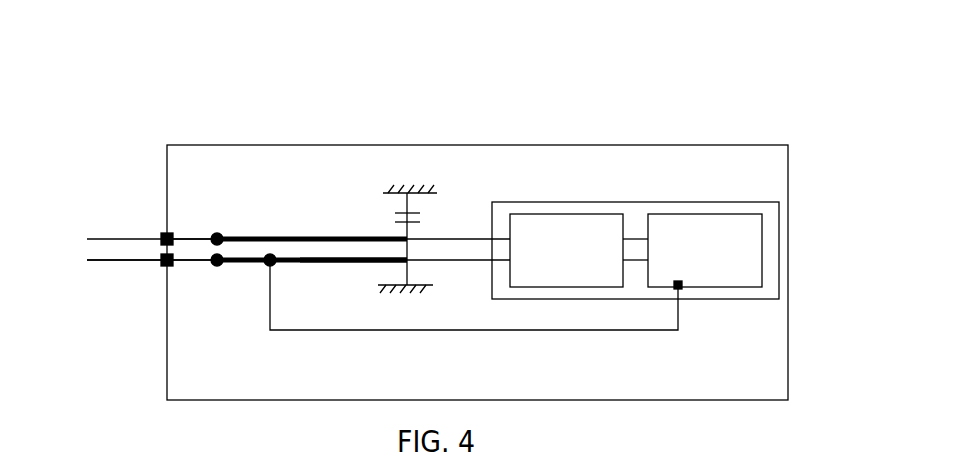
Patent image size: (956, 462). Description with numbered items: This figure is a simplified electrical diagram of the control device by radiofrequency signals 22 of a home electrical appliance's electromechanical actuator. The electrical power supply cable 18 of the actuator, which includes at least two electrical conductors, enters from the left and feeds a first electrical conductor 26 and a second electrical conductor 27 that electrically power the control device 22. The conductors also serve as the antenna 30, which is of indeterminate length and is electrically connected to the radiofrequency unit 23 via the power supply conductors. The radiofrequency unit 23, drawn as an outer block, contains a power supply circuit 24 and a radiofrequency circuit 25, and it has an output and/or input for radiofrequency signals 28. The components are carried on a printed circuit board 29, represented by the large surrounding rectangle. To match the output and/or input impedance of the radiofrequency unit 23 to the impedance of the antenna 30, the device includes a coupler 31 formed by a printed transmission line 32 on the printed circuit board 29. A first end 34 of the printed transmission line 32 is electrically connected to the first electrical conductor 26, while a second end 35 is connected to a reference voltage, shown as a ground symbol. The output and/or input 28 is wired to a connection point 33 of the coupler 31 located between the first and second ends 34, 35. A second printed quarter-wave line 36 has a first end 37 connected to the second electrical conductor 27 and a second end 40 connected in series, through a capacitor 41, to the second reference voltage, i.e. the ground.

The electrical power supply cable 18 is at (274, 289).
The control device by radiofrequency signals 22 is at (441, 233).
The radiofrequency unit 23 is at (668, 227).
The power supply circuit 24 is at (559, 230).
The radiofrequency circuit 25 is at (697, 228).
The first electrical conductor 26 is at (192, 264).
The second electrical conductor 27 is at (191, 236).
The output and/or input for radiofrequency signals 28 is at (684, 292).
The printed circuit board 29 is at (234, 145).
The antenna 30 is at (121, 262).
The coupler 31 is at (312, 326).
The printed transmission line 32 is at (355, 264).
The connection point 33 is at (264, 268).
The first end 34 is at (220, 268).
The second end 35 is at (410, 262).
The second printed quarter-wave line 36 is at (326, 237).
The first end 37 is at (221, 233).
The second end 40 is at (404, 236).
The capacitor 41 is at (412, 213).